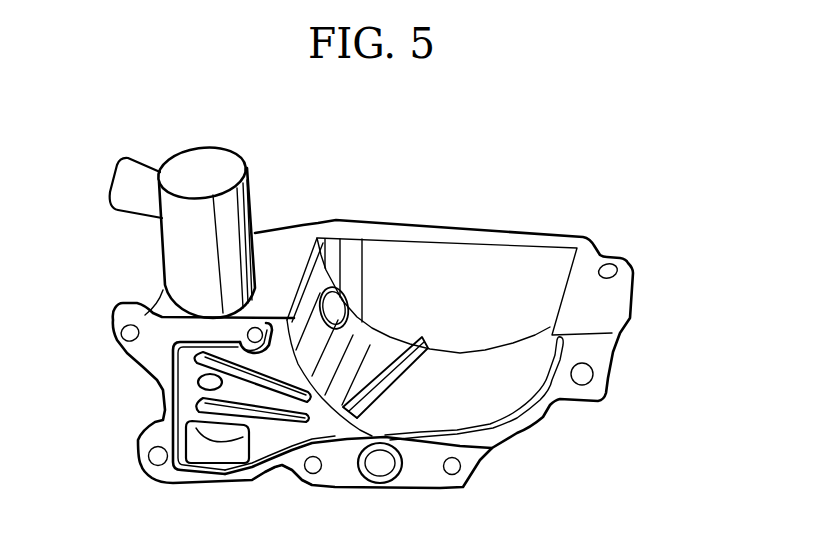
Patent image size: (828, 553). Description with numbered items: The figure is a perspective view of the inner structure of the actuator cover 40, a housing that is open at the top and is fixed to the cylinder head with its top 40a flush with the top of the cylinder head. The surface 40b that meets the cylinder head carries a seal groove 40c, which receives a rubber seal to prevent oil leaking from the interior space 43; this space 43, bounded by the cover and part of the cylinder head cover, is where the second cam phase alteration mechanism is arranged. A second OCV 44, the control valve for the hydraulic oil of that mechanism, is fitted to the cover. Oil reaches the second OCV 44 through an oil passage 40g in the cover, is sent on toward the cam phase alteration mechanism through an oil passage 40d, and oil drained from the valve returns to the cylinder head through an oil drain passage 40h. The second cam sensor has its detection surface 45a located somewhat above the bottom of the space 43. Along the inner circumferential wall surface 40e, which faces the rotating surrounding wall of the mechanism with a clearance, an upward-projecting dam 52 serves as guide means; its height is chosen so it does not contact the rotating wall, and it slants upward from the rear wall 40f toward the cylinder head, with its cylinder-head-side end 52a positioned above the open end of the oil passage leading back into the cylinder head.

The actuator cover 40 is at (602, 243).
The top 40a is at (287, 248).
The surface 40b is at (188, 398).
The seal groove 40c is at (272, 480).
The oil passage 40d is at (286, 432).
The inner circumferential wall surface 40e is at (490, 400).
The rear wall 40f is at (430, 232).
The oil passage 40g is at (205, 383).
The oil drain passage 40h is at (208, 453).
The space 43 is at (468, 273).
The second OCV 44 is at (197, 168).
The detection surface 45a is at (337, 300).
The dam 52 is at (378, 385).
The rib end portion 52a is at (343, 410).